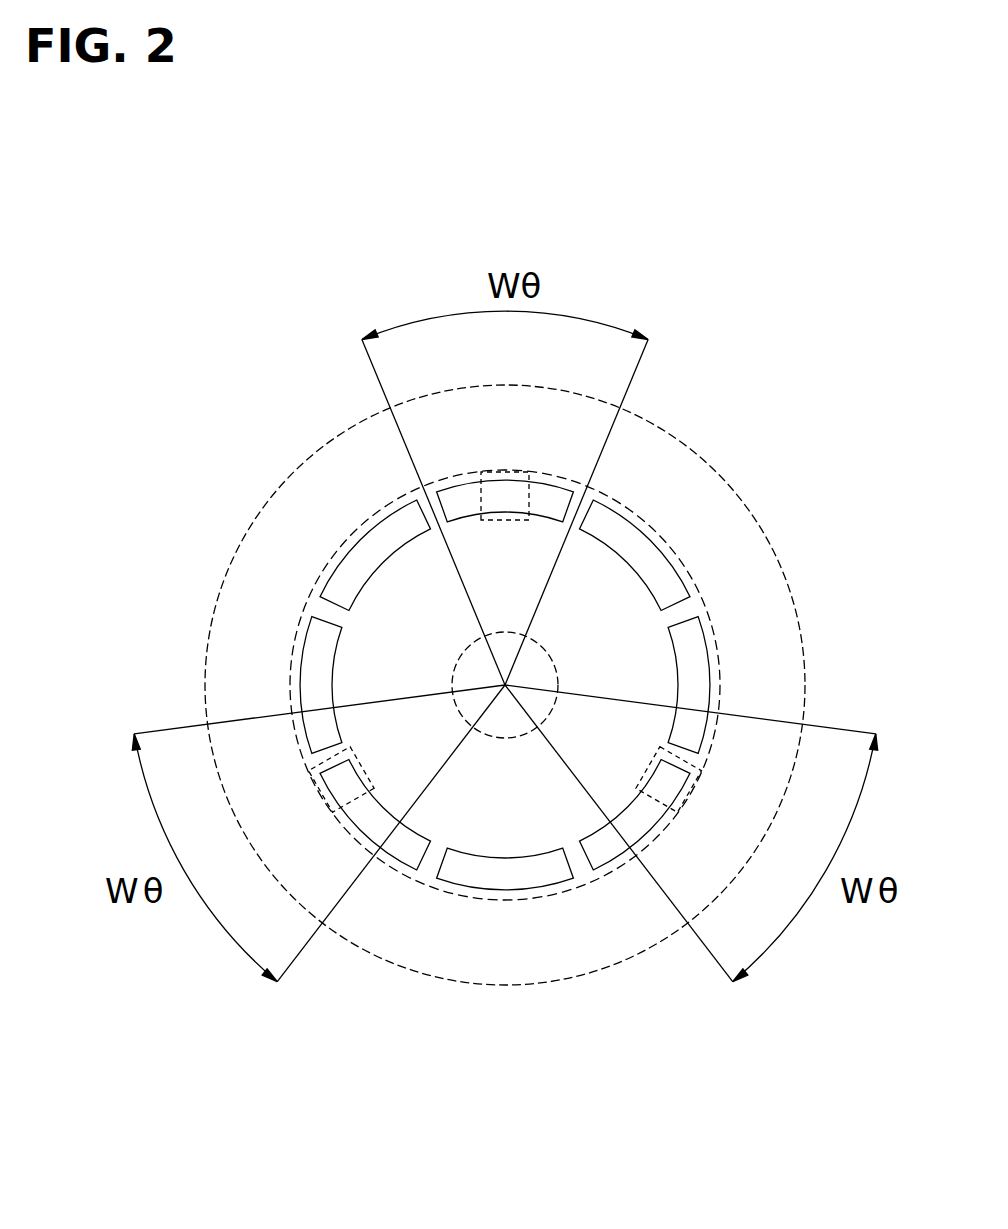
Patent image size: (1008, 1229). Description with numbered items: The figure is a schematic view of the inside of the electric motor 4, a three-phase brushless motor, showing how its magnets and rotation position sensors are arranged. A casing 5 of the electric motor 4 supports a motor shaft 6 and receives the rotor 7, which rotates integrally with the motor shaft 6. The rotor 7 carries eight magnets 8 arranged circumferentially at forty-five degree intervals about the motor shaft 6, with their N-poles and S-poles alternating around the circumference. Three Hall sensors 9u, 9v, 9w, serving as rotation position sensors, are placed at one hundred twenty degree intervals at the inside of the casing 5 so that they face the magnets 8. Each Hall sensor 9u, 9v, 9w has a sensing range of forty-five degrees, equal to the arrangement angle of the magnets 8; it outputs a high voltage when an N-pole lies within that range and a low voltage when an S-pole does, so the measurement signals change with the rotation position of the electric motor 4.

The electric motor 4 is at (441, 685).
The casing 5 is at (307, 457).
The motor shaft 6 is at (490, 742).
The rotor 7 is at (503, 893).
The magnets 8 is at (556, 497).
The Hall sensor 9u is at (505, 522).
The Hall sensor 9v is at (378, 773).
The Hall sensor 9w is at (642, 770).